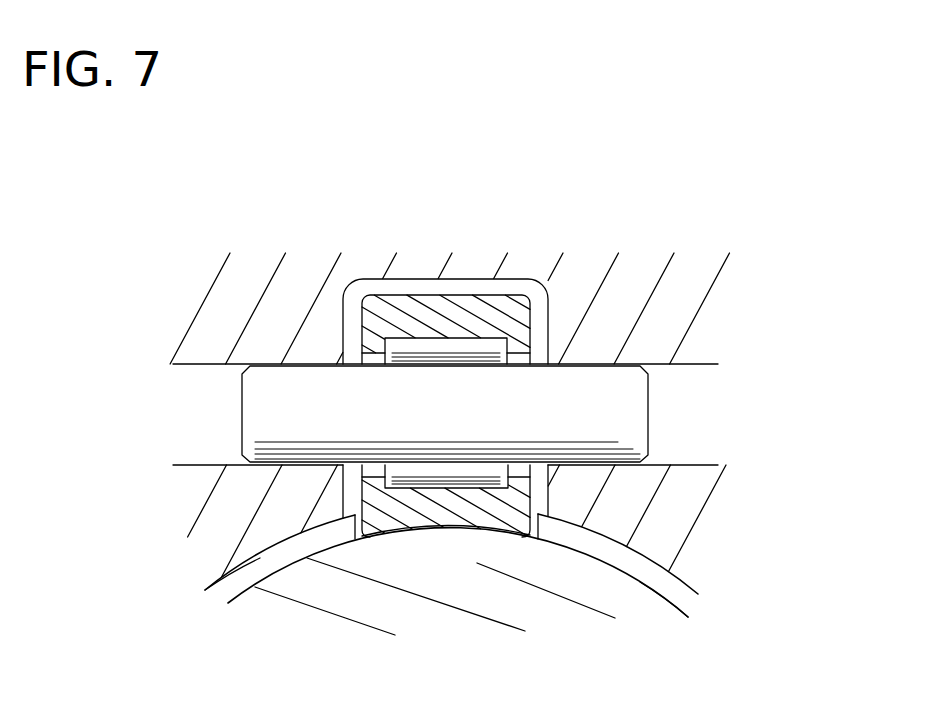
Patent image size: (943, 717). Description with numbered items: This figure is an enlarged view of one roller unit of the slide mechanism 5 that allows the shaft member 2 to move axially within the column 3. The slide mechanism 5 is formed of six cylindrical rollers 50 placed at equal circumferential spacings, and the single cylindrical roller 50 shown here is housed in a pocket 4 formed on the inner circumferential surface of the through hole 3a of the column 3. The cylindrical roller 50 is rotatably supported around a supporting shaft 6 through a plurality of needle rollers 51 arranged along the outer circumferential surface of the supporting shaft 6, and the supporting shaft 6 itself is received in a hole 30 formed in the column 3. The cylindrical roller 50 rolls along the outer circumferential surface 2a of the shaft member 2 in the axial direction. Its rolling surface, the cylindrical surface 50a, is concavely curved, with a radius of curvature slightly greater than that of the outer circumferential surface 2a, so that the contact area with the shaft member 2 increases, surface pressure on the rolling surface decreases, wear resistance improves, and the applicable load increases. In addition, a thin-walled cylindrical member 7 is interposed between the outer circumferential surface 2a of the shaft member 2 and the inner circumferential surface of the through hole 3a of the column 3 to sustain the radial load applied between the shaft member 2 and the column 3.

The shaft member 2 is at (312, 593).
The outer circumferential surface of the shaft member 2a is at (680, 603).
The column 3 is at (222, 300).
The through hole 3a is at (217, 583).
The hole 30 is at (705, 364).
The pocket 4 is at (540, 296).
The slide mechanism 5 is at (381, 284).
The cylindrical roller 50 is at (418, 304).
The cylindrical surface 50a is at (447, 527).
The needle rollers 51 is at (480, 343).
The supporting shaft 6 is at (636, 408).
The thin-walled cylindrical member 7 is at (647, 565).